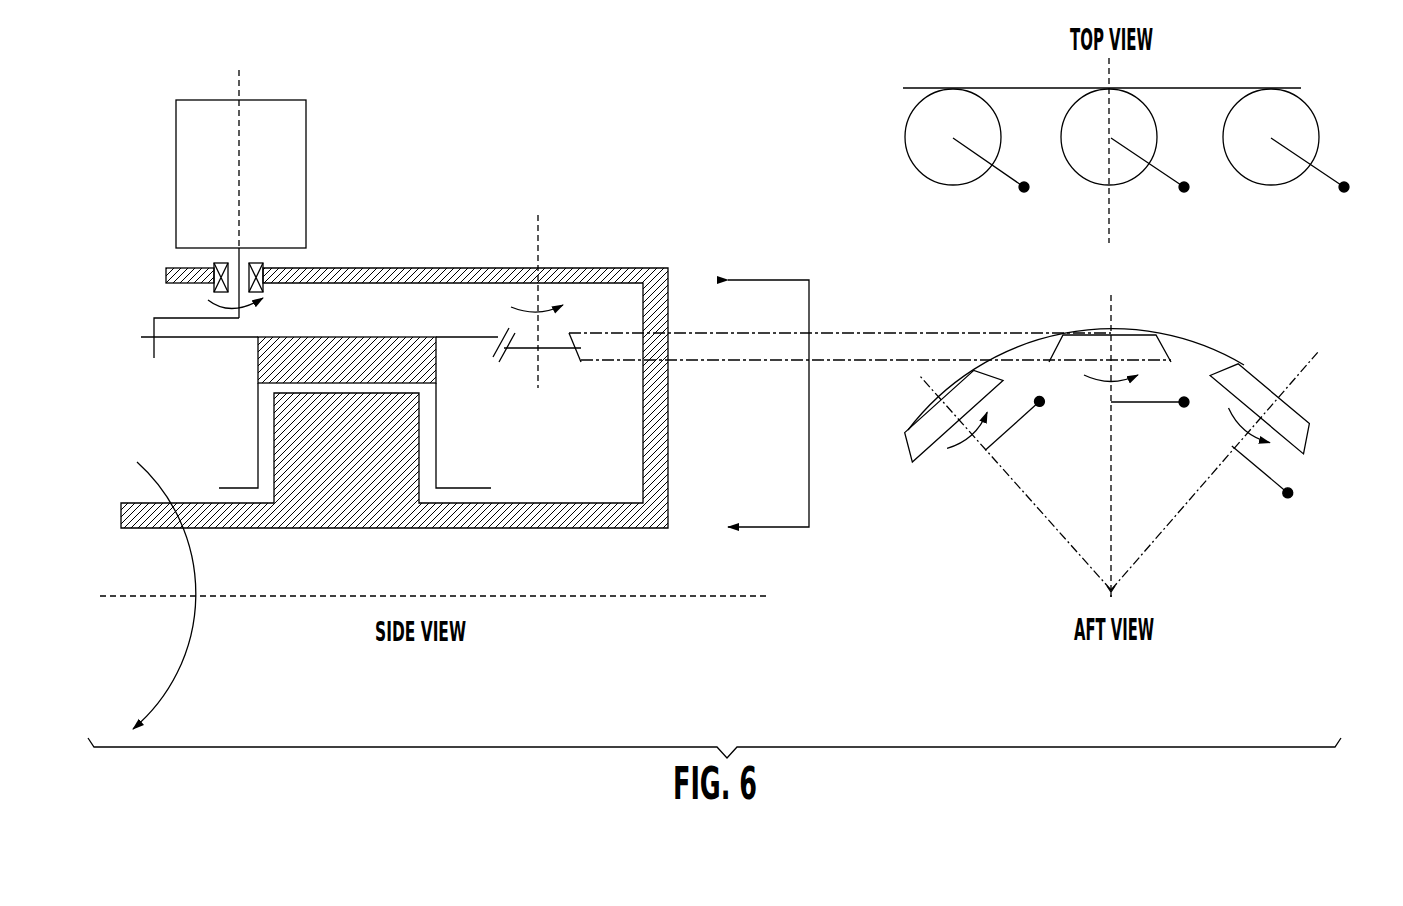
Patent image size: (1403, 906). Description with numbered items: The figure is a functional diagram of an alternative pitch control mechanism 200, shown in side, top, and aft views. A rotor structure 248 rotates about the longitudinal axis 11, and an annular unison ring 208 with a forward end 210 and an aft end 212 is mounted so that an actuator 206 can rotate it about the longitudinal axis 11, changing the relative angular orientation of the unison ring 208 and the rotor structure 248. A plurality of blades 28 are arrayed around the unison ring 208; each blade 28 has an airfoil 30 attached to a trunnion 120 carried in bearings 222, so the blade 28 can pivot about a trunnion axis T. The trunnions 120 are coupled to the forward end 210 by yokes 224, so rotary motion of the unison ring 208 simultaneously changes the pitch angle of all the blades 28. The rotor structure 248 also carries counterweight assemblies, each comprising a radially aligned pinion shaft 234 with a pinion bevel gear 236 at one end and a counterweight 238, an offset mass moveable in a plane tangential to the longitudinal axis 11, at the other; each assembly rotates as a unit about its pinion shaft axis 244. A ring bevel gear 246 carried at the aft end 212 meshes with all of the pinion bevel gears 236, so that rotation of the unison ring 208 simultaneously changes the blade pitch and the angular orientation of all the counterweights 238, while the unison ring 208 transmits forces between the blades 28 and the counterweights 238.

The longitudinal axis 11 is at (642, 598).
The blade 28 is at (318, 123).
The airfoil 30 is at (210, 137).
The trunnion 120 is at (240, 255).
The pitch control mechanism 200 is at (508, 155).
The actuator 206 is at (248, 360).
The unison ring 208 is at (345, 337).
The forward end 210 is at (218, 337).
The aft end 212 is at (467, 337).
The bearings 222 is at (262, 290).
The yoke 224 is at (188, 318).
The pinion shaft 234 is at (537, 293).
The pinion bevel gear 236 is at (575, 365).
The counterweight 238 is at (1003, 178).
The pinion shaft axis 244 is at (537, 225).
The ring bevel gear 246 is at (495, 352).
The rotor structure 248 is at (212, 530).
The trunnion axis T is at (240, 78).